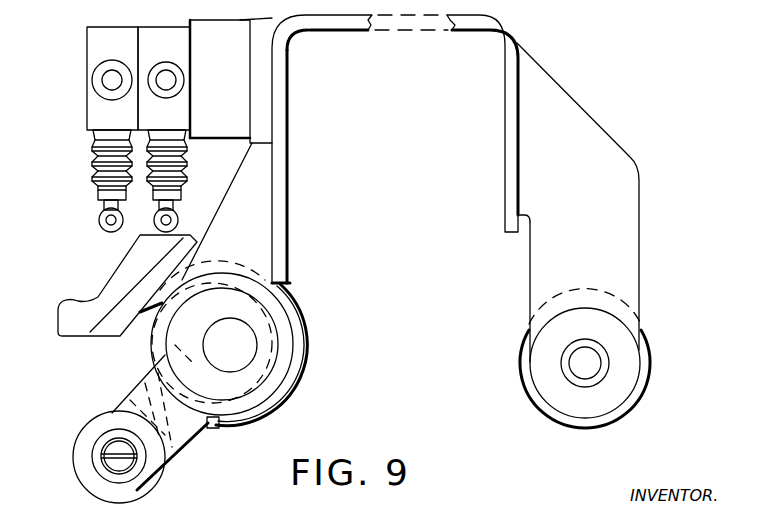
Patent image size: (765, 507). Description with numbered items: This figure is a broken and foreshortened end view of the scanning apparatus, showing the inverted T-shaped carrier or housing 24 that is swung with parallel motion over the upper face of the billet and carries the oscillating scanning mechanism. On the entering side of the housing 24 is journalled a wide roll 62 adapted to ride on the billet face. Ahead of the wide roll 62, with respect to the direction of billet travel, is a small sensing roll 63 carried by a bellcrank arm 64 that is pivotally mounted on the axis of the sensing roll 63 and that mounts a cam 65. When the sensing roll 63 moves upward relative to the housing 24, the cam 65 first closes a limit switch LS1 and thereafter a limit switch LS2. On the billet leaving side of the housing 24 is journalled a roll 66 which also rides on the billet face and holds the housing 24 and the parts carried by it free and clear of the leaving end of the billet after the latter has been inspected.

The limit switch LS1 is at (157, 35).
The limit switch LS2 is at (125, 33).
The carrier 24 is at (512, 35).
The wide roll 62 is at (305, 363).
The sensing roll 63 is at (140, 483).
The bellcrank arm 64 is at (176, 428).
The cam 65 is at (124, 263).
The roll 66 is at (644, 368).